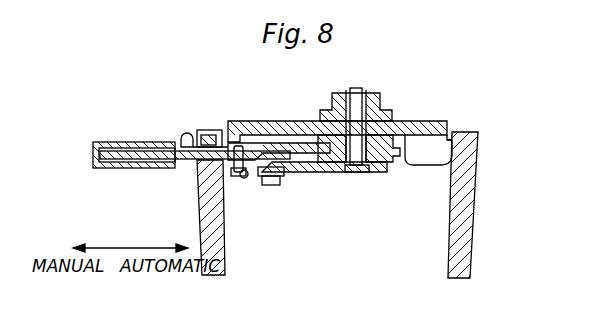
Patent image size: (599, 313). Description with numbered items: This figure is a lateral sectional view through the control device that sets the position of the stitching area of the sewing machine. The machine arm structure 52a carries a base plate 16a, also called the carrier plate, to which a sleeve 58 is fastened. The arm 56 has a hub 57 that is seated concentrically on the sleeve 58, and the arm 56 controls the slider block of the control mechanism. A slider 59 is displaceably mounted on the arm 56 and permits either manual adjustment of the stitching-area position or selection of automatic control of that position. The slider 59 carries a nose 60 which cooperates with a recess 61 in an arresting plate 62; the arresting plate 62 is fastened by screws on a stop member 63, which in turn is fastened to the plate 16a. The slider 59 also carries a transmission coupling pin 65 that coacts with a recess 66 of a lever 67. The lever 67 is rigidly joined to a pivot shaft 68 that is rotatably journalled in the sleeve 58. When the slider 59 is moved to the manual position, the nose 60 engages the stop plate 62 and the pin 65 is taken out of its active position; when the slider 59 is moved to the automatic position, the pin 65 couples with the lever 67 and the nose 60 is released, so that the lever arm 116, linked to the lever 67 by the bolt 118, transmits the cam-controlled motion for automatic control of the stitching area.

The base plate 16a is at (428, 121).
The arm structure 52a is at (478, 198).
The arm 56 is at (108, 168).
The hub 57 is at (332, 167).
The sleeve 58 is at (377, 165).
The slider 59 is at (112, 143).
The nose 60 is at (228, 143).
The recess 61 is at (211, 144).
The arresting plate 62 is at (191, 143).
The stop member 63 is at (184, 138).
The pin 65 is at (243, 172).
The recess 66 is at (234, 176).
The lever 67 is at (315, 170).
The pivot shaft 68 is at (356, 93).
The lever arm 116 is at (279, 175).
The bolt 118 is at (270, 180).